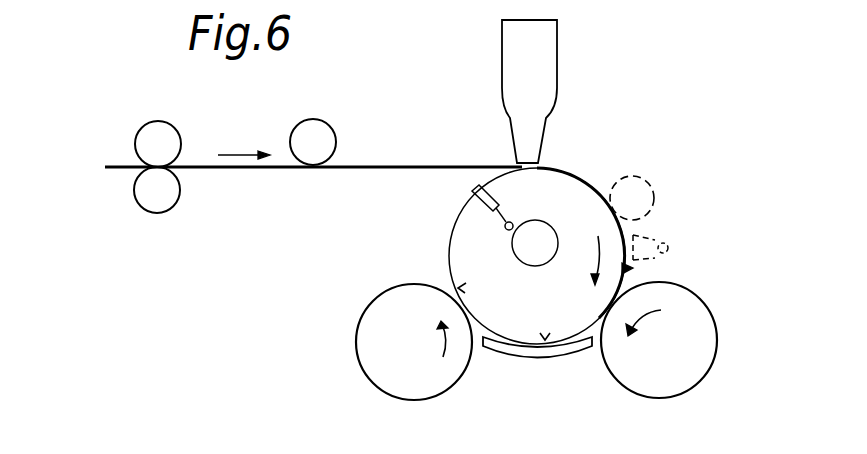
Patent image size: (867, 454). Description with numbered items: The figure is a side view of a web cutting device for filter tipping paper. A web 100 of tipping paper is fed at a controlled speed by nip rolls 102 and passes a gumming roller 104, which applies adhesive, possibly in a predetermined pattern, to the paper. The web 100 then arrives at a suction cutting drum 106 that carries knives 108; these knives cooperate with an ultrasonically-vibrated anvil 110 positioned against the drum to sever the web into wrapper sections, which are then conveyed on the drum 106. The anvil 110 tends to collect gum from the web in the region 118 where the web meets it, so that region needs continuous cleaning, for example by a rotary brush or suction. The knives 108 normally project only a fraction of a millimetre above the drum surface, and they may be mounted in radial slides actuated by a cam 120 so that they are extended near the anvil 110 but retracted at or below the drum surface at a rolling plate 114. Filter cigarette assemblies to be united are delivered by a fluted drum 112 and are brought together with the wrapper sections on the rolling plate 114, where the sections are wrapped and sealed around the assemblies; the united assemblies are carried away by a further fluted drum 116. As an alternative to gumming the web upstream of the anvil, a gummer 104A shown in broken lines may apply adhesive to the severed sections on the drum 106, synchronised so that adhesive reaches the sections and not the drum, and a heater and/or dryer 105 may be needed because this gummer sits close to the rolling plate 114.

The web 100 is at (357, 170).
The nip rolls 102 is at (145, 188).
The gumming roller 104 is at (330, 140).
The gummer 104A is at (657, 190).
The heater and/or dryer 105 is at (670, 247).
The suction cutting drum 106 is at (463, 253).
The knives 108 is at (475, 188).
The ultrasonically-vibrated anvil 110 is at (543, 92).
The fluted drum 112 is at (710, 355).
The rolling plate 114 is at (548, 362).
The further fluted drum 116 is at (362, 348).
The region 118 is at (508, 156).
The cam 120 is at (543, 258).